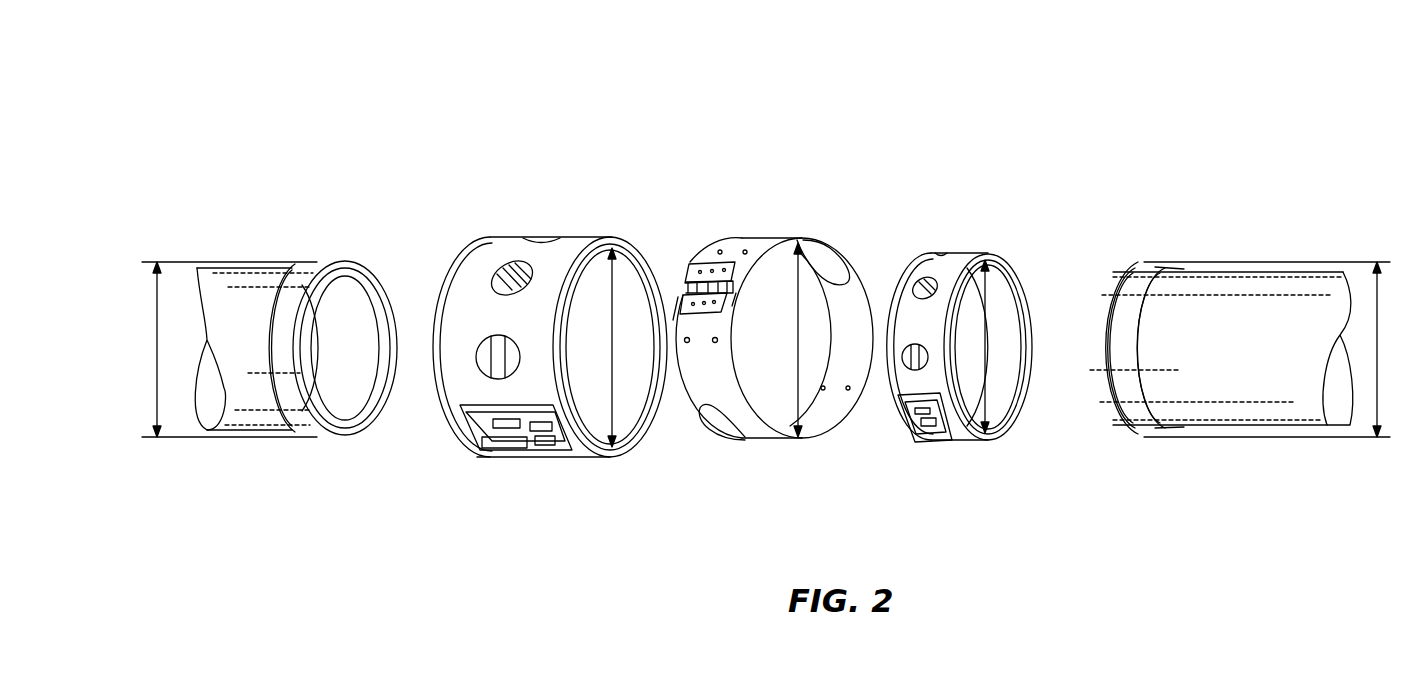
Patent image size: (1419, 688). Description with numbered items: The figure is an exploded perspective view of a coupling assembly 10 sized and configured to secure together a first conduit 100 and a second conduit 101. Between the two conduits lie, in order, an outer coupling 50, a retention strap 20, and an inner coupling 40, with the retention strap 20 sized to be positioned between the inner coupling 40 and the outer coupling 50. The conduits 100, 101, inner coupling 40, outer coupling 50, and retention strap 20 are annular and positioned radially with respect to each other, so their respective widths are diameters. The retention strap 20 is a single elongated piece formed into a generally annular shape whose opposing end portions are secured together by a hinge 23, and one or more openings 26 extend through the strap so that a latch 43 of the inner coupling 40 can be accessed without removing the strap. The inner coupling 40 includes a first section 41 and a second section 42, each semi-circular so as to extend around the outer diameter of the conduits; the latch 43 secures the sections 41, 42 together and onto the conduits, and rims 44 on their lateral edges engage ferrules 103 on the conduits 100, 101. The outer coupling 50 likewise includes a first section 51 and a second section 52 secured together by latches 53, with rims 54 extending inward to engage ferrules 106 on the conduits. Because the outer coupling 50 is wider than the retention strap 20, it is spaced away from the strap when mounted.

The coupling assembly 10 is at (676, 108).
The retention strap 20 is at (755, 238).
The hinge 23 is at (705, 270).
The opening 26 is at (725, 417).
The inner coupling 40 is at (963, 437).
The first section 41 is at (1000, 395).
The second section 42 is at (912, 382).
The latch 43 is at (925, 440).
The rim 44 is at (1028, 312).
The outer coupling 50 is at (484, 265).
The first section 51 is at (615, 440).
The second section 52 is at (470, 290).
The latch 53 is at (497, 440).
The rim 54 is at (612, 250).
The first conduit 100 is at (245, 415).
The second conduit 101 is at (1197, 410).
The ferrule 103 is at (340, 430).
The ferrule 106 is at (280, 438).